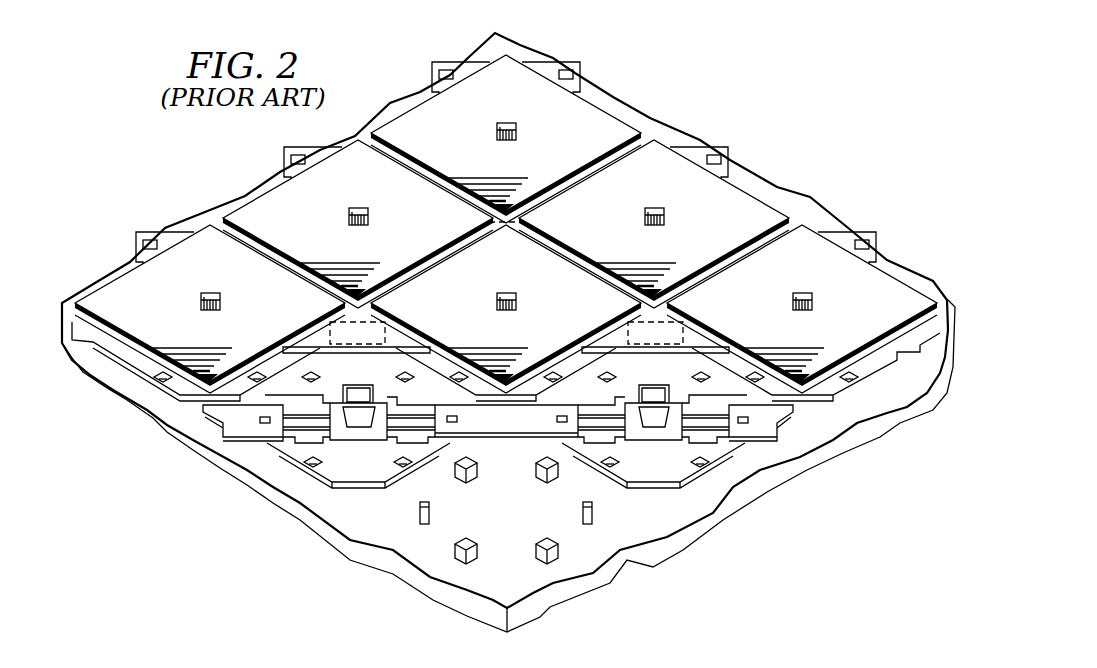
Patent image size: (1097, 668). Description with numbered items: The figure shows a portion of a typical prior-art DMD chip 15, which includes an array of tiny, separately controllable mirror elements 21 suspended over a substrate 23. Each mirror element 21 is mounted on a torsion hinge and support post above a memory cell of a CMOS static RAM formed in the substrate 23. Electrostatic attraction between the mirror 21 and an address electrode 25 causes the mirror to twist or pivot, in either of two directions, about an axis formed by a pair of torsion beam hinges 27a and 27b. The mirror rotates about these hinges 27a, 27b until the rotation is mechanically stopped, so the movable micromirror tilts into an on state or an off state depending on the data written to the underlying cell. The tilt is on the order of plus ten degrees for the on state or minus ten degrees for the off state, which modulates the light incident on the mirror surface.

The DMD chip 15 is at (508, 332).
The mirror element 21 is at (816, 278).
The substrate 23 is at (715, 516).
The address electrode 25 is at (655, 472).
The torsion beam hinge 27a is at (598, 417).
The torsion beam hinge 27b is at (707, 417).